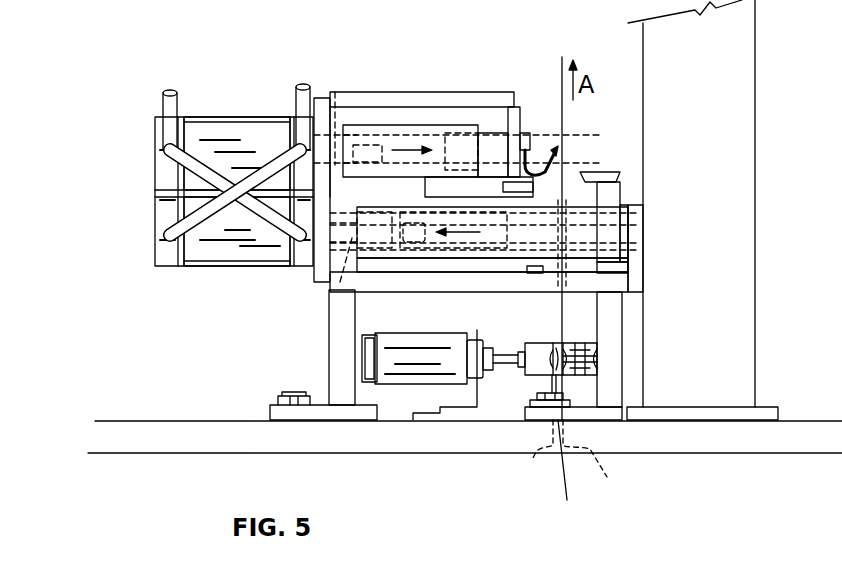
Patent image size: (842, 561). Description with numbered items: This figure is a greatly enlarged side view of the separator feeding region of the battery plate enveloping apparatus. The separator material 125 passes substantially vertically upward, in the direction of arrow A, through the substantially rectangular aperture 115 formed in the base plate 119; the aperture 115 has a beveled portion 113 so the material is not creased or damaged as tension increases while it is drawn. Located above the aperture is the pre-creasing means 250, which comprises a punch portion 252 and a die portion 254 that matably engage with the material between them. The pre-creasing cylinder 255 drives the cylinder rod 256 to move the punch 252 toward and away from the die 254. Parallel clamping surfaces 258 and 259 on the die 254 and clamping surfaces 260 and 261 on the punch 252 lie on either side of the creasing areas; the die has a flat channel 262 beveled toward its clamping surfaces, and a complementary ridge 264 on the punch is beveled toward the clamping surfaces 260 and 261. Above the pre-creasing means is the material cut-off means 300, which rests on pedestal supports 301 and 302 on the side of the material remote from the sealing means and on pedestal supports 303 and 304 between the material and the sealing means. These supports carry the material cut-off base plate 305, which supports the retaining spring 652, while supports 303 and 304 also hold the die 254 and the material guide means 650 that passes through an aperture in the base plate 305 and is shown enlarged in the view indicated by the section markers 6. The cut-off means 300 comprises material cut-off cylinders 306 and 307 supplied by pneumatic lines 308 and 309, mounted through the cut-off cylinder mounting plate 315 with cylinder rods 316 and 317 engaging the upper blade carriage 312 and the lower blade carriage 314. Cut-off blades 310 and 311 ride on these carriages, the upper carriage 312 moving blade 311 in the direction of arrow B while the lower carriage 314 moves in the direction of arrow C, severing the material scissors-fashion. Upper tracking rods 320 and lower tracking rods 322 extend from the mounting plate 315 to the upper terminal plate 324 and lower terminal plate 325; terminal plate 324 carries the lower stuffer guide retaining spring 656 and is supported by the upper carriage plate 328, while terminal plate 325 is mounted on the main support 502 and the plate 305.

The base plate 119 is at (128, 442).
The material cut-off means 300 is at (216, 178).
The material cut-off cylinder 306 is at (228, 135).
The material cut-off cylinder 307 is at (208, 247).
The pneumatic line 308 is at (302, 93).
The pneumatic line 309 is at (166, 95).
The pedestal support 301 is at (340, 360).
The pedestal support 302 is at (283, 413).
The cut-off cylinder mounting plate 315 is at (324, 98).
The cylinder rod 316 is at (335, 100).
The upper carriage plate 328 is at (452, 75).
The upper blade carriage 312 is at (397, 120).
The upper tracking rod 320 is at (484, 137).
The upper terminal plate 324 is at (520, 112).
The lower tracking rod 322 is at (442, 191).
The lower stuffer guide retaining spring 656 is at (557, 147).
The separator material 125 is at (588, 492).
The cut-off blade 311 is at (562, 157).
The cut-off blade 310 is at (586, 172).
The lower blade carriage 314 is at (376, 265).
The cylinder rod 317 is at (336, 290).
The section indicator for FIG. 6 is at (537, 193).
The material cut-off base plate 305 is at (398, 282).
The retaining spring 652 is at (548, 274).
The material guide means 650 is at (620, 293).
The lower terminal plate 325 is at (640, 258).
The pedestal support 303 is at (610, 317).
The pedestal support 304 is at (596, 418).
The main support 502 is at (738, 308).
The pre-creasing means 250 is at (549, 355).
The pre-creasing cylinder 255 is at (432, 338).
The cylinder rod 256 is at (500, 350).
The punch portion 252 is at (508, 368).
The clamping surface 260 is at (556, 360).
The ridge 264 is at (525, 352).
The clamping surface 258 is at (590, 350).
The clamping surface 259 is at (590, 364).
The die portion 254 is at (590, 377).
The channel 262 is at (640, 352).
The clamping surface 261 is at (546, 372).
The aperture 115 is at (543, 454).
The beveled portion 113 is at (611, 454).